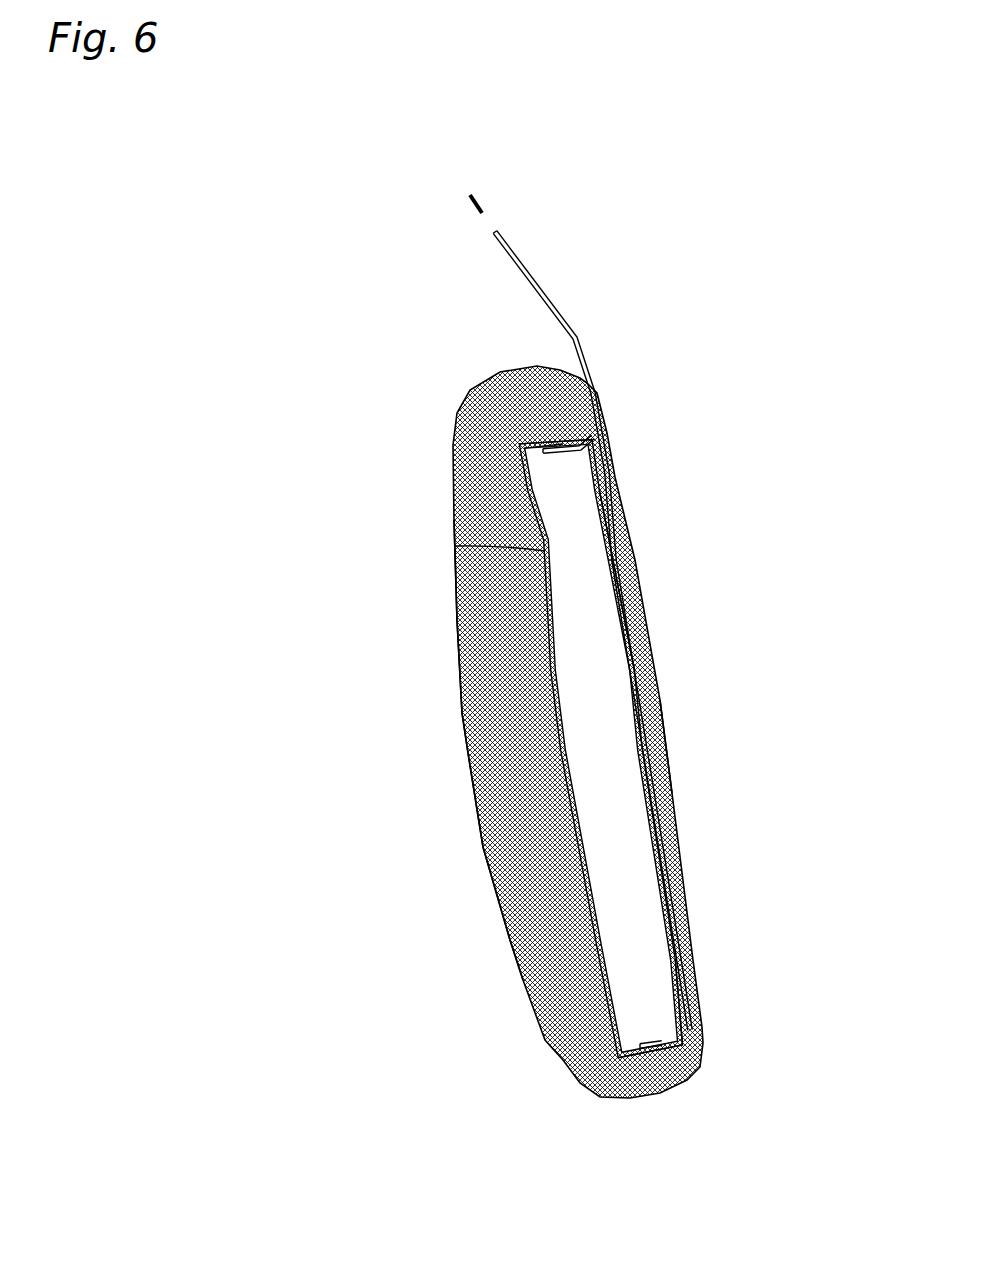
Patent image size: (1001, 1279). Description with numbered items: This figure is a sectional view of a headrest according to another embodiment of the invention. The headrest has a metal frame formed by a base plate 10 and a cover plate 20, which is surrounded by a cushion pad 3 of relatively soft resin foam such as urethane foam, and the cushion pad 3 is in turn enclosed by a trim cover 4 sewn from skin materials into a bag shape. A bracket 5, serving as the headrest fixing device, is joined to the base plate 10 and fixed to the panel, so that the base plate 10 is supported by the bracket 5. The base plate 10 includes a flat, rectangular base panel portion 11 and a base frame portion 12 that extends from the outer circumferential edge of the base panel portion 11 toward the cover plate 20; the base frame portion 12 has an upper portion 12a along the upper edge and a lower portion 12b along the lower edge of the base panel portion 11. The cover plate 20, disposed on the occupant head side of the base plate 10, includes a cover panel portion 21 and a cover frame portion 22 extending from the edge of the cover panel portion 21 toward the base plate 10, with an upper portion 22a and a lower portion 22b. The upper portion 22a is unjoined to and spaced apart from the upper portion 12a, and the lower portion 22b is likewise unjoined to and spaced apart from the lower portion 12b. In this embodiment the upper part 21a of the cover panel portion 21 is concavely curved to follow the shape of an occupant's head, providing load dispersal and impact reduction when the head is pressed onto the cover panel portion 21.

The cushion pad 3 is at (543, 927).
The trim cover 4 is at (482, 835).
The bracket 5 is at (512, 243).
The base plate 10 is at (640, 668).
The base panel portion 11 is at (637, 745).
The base frame portion 12 is at (681, 1061).
The upper portion of base frame portion 12a is at (565, 440).
The lower portion of base frame portion 12b is at (657, 1053).
The cover plate 20 is at (540, 668).
The cover panel portion 21 is at (563, 748).
The upper part of cover panel portion 21a is at (455, 546).
The cover frame portion 22 is at (527, 430).
The upper portion of cover frame portion 22a is at (552, 437).
The lower portion of cover frame portion 22b is at (635, 1062).